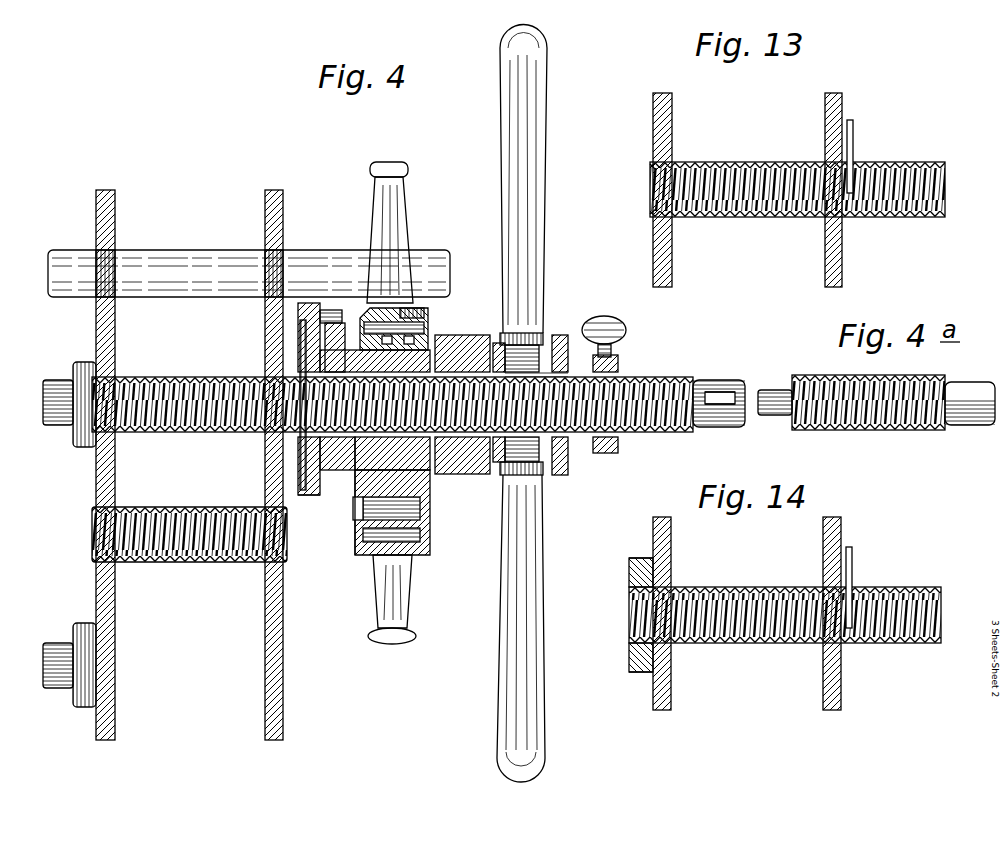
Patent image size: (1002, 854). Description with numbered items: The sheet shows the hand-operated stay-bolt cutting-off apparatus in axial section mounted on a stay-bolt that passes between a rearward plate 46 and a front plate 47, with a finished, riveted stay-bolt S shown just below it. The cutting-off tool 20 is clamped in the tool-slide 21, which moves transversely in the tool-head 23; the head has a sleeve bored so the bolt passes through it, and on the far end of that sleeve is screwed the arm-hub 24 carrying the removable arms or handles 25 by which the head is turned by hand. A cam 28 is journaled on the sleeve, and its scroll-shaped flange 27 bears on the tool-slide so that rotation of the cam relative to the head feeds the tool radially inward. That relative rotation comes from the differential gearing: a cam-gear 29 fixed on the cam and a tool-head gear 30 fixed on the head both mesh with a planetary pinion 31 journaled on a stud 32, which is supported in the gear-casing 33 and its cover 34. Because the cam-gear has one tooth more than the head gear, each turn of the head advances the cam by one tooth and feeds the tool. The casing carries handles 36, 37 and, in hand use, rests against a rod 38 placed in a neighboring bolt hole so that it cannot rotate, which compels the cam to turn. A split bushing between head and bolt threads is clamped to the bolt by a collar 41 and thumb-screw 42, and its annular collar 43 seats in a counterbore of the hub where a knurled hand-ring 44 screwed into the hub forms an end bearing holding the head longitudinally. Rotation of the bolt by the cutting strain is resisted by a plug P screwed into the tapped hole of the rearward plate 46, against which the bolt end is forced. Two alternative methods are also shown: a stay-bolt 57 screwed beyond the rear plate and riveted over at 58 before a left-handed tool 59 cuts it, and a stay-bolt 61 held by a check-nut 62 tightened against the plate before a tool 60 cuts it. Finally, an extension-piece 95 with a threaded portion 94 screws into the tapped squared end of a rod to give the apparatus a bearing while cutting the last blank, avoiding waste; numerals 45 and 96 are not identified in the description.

In FIG. 4, the cutting-off tool 20 is at (297, 440).
In FIG. 4, the tool-slide 21 is at (314, 495).
In FIG. 4, the tool-head 23 is at (298, 472).
In FIG. 4, the arm-hub 24 is at (480, 468).
In FIG. 4, the arms or handles 25 is at (530, 150).
In FIG. 4, the cam flange 27 is at (340, 470).
In FIG. 4, the cam 28 is at (298, 348).
In FIG. 4, the cam-gear 29 is at (365, 303).
In FIG. 4, the tool-head gear 30 is at (420, 340).
In FIG. 4, the planetary pinion 31 is at (357, 537).
In FIG. 4, the pin or stud 32 is at (420, 510).
In FIG. 4, the gear-casing 33 is at (367, 555).
In FIG. 4, the cover 34 is at (430, 540).
In FIG. 4, the handle 36 is at (398, 199).
In FIG. 4, the handle 37 is at (400, 595).
In FIG. 4, the rod 38 is at (207, 251).
In FIG. 4, the collar 41 is at (608, 453).
In FIG. 4, the thumb-screw 42 is at (627, 329).
In FIG. 4, the annular enlargement or collar 43 is at (568, 458).
In FIG. 4, the knurled hand-ring 44 is at (560, 475).
In FIG. 4, the nut 45 is at (441, 461).
In FIG. 4, the rearward plate 46 is at (96, 323).
In FIG. 4, the front plate 47 is at (265, 315).
In FIG. 13, the stay-bolt 57 is at (761, 162).
In FIG. 13, the riveted end 58 is at (654, 214).
In FIG. 13, the tool 59 is at (853, 133).
In FIG. 14, the tool 60 is at (852, 562).
In FIG. 14, the stay-bolt 61 is at (736, 643).
In FIG. 14, the check-nut 62 is at (632, 572).
In FIG. 4A, the threaded portion 94 is at (776, 415).
In FIG. 4A, the extension-piece 95 is at (895, 430).
In FIG. 4, the screw end 96 is at (724, 385).
In FIG. 4, the plug P is at (62, 425).
In FIG. 4, the stay-bolt S is at (183, 562).